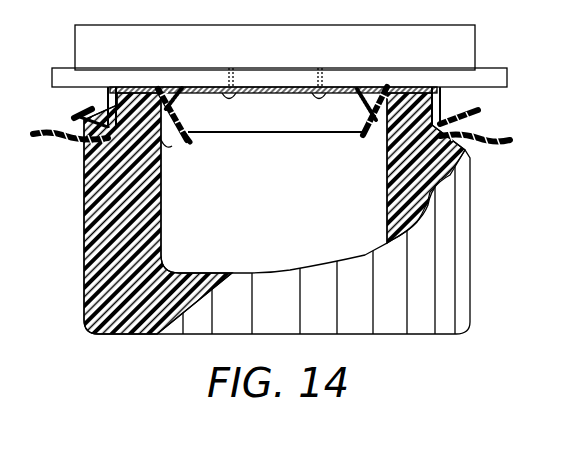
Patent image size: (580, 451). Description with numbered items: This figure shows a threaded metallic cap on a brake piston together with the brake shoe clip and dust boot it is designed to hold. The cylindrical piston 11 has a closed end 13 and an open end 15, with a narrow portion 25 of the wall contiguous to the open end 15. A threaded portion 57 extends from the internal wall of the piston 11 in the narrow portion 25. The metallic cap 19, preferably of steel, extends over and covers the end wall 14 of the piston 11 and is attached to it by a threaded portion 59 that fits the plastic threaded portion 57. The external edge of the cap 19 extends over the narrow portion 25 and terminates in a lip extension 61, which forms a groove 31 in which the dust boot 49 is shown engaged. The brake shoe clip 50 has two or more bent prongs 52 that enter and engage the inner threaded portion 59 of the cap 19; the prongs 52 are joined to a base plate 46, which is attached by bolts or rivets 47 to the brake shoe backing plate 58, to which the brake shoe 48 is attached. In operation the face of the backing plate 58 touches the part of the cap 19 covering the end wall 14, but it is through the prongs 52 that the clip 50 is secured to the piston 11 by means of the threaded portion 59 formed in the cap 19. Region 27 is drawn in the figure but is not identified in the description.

The piston 11 is at (470, 225).
The closed end 13 is at (280, 330).
The end wall 14 is at (403, 87).
The open end 15 is at (303, 241).
The metallic cap 19 is at (392, 88).
The narrow portion 25 is at (107, 93).
The inner corner 27 is at (168, 148).
The groove 31 is at (84, 145).
The base plate 46 is at (237, 97).
The bolts or rivets 47 is at (340, 100).
The brake shoe 48 is at (475, 45).
The dust boot 49 is at (512, 137).
The brake shoe clip 50 is at (285, 93).
The bent prongs 52 is at (188, 130).
The threaded portion 57 is at (161, 87).
The brake shoe backing plate 58 is at (507, 75).
The threaded portion 59 is at (182, 88).
The lip extension 61 is at (480, 114).